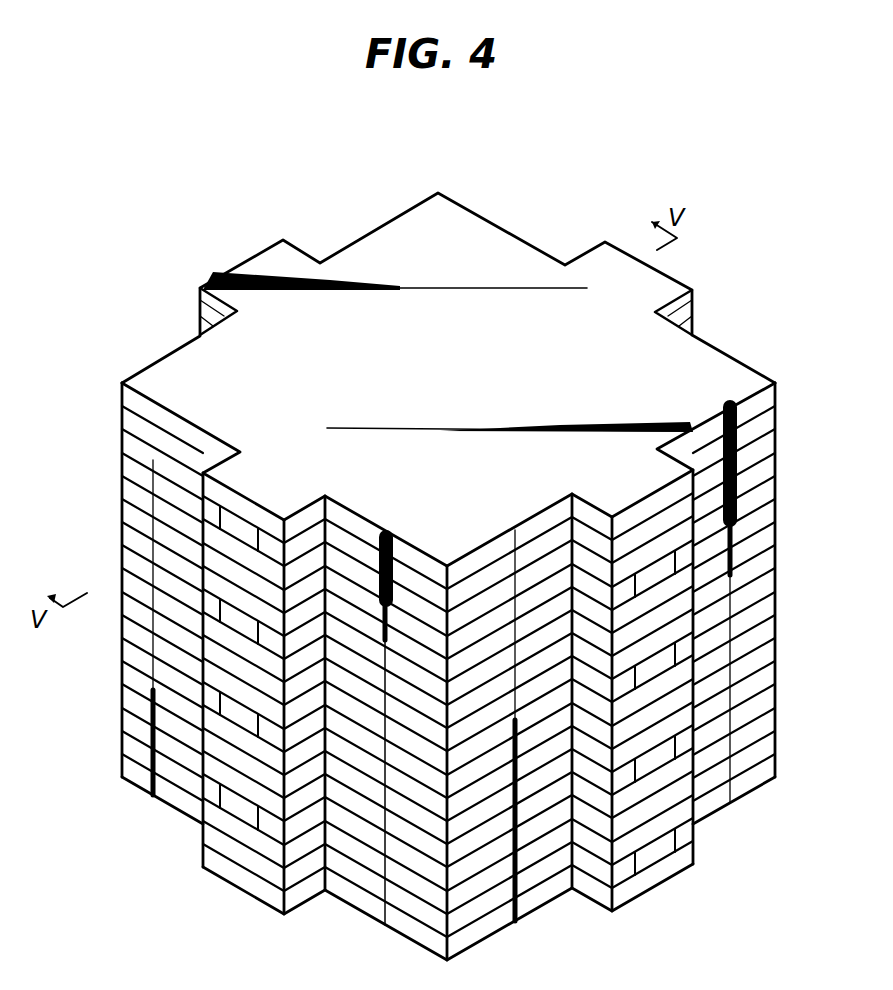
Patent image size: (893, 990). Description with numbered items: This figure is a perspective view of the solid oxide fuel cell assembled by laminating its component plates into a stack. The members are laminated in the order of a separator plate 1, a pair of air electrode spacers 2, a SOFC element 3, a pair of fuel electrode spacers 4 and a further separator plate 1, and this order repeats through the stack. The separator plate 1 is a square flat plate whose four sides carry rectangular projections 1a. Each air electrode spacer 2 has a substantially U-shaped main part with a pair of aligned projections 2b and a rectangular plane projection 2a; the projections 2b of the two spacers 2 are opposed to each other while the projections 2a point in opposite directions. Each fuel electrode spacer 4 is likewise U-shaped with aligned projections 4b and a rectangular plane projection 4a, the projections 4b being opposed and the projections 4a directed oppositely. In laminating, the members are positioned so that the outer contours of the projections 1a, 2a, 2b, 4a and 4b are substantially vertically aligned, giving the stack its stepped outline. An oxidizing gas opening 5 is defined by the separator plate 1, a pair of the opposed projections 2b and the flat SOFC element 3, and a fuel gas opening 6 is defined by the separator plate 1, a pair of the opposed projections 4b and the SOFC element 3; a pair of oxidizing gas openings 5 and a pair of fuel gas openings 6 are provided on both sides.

The separator plate 1 is at (472, 222).
The rectangular projections 1a is at (253, 263).
The air electrode spacers 2 is at (121, 405).
The rectangular plane projection 2a is at (637, 573).
The projections 2b is at (268, 537).
The SOFC element 3 is at (121, 429).
The fuel electrode spacers 4 is at (121, 452).
The rectangular plane projection 4a is at (307, 580).
The projections 4b is at (685, 553).
The oxidizing gas opening 5 is at (230, 507).
The fuel gas opening 6 is at (612, 515).